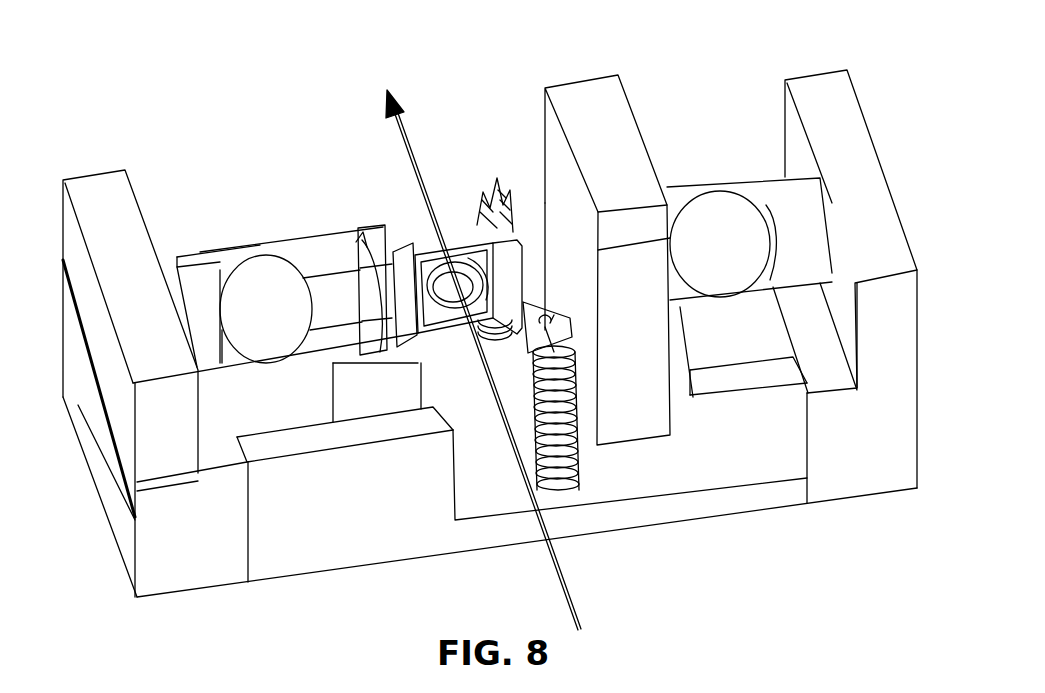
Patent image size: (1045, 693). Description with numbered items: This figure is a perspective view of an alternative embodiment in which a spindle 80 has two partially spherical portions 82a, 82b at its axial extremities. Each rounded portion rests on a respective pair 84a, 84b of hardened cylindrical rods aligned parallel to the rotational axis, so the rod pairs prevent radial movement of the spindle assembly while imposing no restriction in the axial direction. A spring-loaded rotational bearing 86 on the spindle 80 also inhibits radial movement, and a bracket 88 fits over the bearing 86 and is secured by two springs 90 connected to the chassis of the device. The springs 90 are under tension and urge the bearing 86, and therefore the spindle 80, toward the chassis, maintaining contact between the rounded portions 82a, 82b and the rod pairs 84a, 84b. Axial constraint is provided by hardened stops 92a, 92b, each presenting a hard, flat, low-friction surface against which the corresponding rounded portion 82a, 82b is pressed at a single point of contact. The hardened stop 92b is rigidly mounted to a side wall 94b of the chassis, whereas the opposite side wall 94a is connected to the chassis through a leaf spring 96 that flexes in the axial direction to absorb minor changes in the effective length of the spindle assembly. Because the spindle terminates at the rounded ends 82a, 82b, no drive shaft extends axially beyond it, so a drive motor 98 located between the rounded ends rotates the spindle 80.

The spindle 80 is at (335, 288).
The partially spherical portion 82a is at (258, 290).
The partially spherical portion 82b is at (712, 212).
The pair of cylindrical rods 84a is at (312, 345).
The pair of cylindrical rods 84b is at (678, 296).
The spring-loaded rotational bearing 86 is at (499, 228).
The bracket 88 is at (511, 206).
The spring 90 is at (503, 318).
The hardened stop 92a is at (173, 290).
The hardened stop 92b is at (787, 208).
The side wall 94a is at (101, 200).
The side wall 94b is at (866, 157).
The leaf spring 96 is at (115, 425).
The drive motor 98 is at (591, 104).